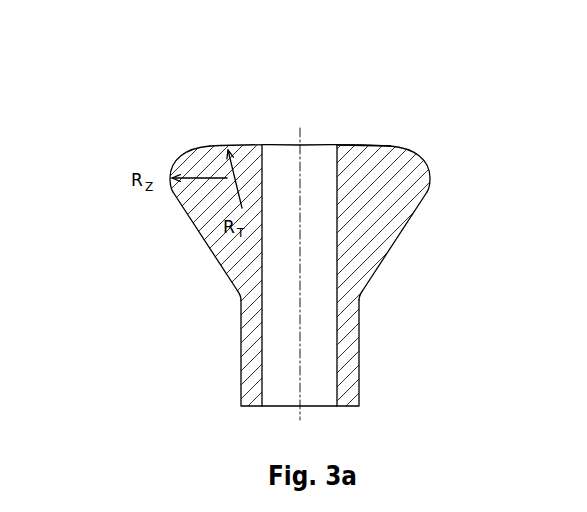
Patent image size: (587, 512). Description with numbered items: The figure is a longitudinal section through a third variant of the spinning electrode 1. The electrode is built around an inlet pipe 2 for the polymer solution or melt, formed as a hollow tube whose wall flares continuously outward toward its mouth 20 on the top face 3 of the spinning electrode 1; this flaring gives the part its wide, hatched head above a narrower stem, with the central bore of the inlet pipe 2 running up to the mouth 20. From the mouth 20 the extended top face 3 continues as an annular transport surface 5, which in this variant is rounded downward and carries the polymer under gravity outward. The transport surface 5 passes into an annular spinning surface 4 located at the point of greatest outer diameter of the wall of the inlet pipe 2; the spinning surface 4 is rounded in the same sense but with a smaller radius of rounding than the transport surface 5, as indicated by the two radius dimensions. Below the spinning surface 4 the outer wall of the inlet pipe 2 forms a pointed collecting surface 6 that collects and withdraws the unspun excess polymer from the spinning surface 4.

The spinning electrode 1 is at (293, 214).
The inlet pipe 2 is at (238, 318).
The top face 3 is at (280, 193).
The spinning surface 4 is at (430, 182).
The transport surface 5 is at (370, 140).
The collecting surface 6 is at (385, 292).
The mouth 20 is at (287, 145).